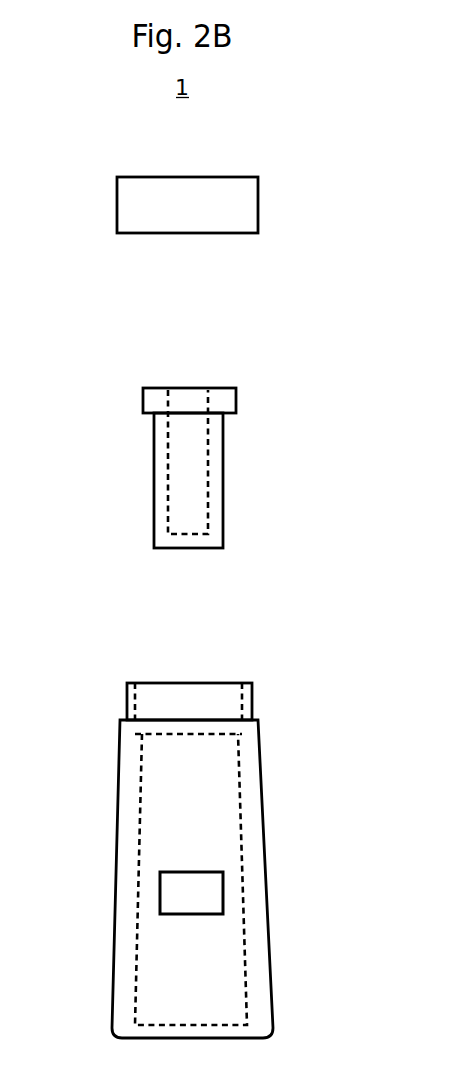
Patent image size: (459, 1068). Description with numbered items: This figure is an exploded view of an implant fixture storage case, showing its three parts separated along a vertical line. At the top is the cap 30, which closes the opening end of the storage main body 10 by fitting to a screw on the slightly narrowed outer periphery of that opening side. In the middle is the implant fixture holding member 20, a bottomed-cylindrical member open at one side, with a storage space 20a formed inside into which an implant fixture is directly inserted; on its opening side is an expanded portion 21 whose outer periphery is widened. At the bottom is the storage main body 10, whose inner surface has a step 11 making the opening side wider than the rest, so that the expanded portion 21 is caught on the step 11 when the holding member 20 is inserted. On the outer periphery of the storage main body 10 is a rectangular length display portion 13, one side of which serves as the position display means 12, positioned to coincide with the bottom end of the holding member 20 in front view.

The storage main body 10 is at (173, 836).
The step 11 is at (228, 713).
The position display means 12 is at (197, 872).
The length display portion 13 is at (165, 898).
The implant fixture holding member 20 is at (143, 431).
The storage space 20a is at (185, 381).
The expanded portion 21 is at (153, 401).
The cap 30 is at (120, 203).